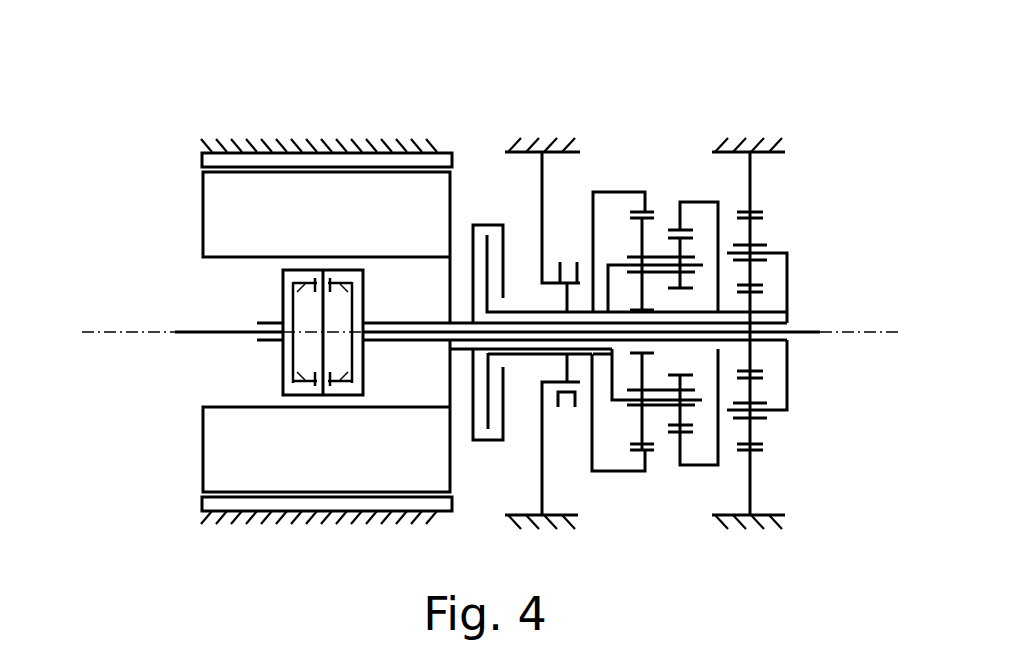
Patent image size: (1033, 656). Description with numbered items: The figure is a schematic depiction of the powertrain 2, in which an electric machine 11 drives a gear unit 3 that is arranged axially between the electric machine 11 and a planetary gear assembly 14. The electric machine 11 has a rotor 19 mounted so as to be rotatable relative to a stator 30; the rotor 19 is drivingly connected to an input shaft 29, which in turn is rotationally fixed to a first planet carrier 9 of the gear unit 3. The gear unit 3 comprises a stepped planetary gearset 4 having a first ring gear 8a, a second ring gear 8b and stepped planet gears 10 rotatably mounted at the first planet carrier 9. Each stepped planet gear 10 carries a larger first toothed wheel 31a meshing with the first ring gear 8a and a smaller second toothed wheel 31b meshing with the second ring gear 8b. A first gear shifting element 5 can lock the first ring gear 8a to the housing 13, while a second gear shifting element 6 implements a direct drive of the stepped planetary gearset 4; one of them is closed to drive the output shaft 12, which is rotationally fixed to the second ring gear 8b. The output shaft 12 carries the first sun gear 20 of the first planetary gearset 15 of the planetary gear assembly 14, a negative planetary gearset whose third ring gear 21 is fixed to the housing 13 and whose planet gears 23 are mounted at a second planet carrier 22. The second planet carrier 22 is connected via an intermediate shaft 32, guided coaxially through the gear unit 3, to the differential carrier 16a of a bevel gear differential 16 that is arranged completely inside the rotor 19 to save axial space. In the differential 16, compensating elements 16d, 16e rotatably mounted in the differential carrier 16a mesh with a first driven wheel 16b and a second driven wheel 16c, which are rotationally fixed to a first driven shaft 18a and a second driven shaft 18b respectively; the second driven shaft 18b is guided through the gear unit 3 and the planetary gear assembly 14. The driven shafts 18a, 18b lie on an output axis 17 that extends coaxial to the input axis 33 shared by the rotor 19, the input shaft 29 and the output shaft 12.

The powertrain 2 is at (260, 282).
The gear unit 3 is at (651, 160).
The stepped planetary gearset 4 is at (663, 455).
The first gear shifting element 5 is at (567, 418).
The second gear shifting element 6 is at (485, 455).
The first ring gear 8a is at (652, 210).
The second ring gear 8b is at (678, 195).
The first planet carrier 9 is at (612, 402).
The stepped planet gear 10 is at (690, 408).
The electric machine 11 is at (177, 457).
The output shaft 12 is at (790, 302).
The housing 13 is at (270, 140).
The planetary gear assembly 14 is at (781, 181).
The first planetary gearset 15 is at (779, 214).
The differential 16 is at (242, 347).
The differential carrier 16a is at (362, 388).
The first driven wheel 16b is at (294, 313).
The second driven wheel 16c is at (352, 311).
The compensating element 16d is at (305, 283).
The compensating element 16e is at (342, 383).
The output axis 17 is at (120, 333).
The first driven shaft 18a is at (190, 326).
The second driven shaft 18b is at (805, 322).
The rotor 19 is at (220, 197).
The first sun gear 20 is at (762, 366).
The third ring gear 21 is at (755, 450).
The second planet carrier 22 is at (773, 412).
The planet gear 23 is at (752, 433).
The input shaft 29 is at (462, 323).
The stator 30 is at (200, 161).
The first toothed wheel 31a is at (632, 220).
The second toothed wheel 31b is at (675, 243).
The intermediate shaft 32 is at (420, 342).
The input axis 33 is at (120, 333).